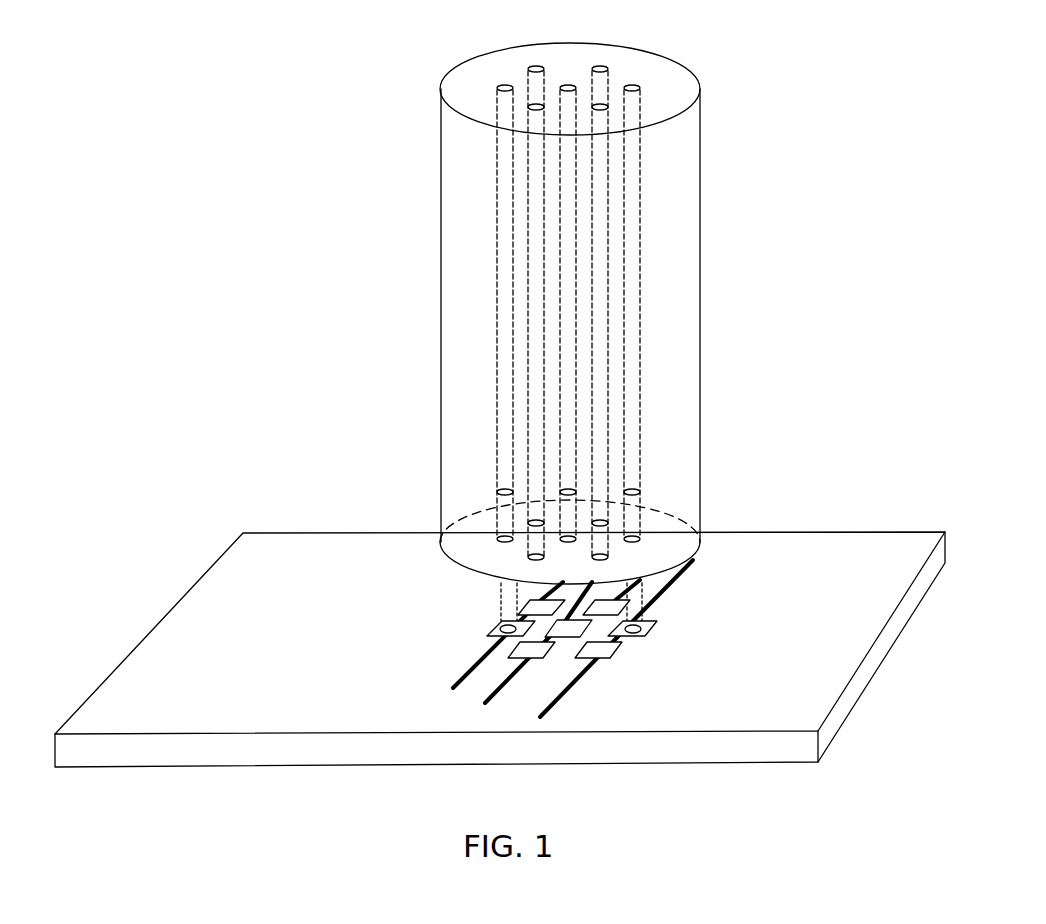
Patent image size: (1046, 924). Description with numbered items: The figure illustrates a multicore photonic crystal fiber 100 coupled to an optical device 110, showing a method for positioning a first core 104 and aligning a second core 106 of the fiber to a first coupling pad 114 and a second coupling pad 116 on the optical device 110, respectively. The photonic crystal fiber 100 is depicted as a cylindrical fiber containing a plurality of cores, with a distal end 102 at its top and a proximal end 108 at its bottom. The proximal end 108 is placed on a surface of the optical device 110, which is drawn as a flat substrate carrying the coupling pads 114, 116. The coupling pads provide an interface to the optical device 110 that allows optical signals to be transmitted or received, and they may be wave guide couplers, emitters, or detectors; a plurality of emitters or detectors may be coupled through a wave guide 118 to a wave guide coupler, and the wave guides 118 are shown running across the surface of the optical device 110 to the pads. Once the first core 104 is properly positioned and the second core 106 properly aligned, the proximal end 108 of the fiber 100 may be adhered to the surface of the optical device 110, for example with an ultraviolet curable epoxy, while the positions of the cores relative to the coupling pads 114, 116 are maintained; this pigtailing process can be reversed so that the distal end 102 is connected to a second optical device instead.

The multicore photonic crystal fiber 100 is at (565, 303).
The distal end 102 is at (572, 58).
The first core 104 is at (634, 83).
The second core 106 is at (503, 83).
The proximal end 108 is at (681, 537).
The optical device 110 is at (202, 606).
The first coupling pad 114 is at (648, 618).
The second coupling pad 116 is at (492, 628).
The wave guide 118 is at (458, 678).